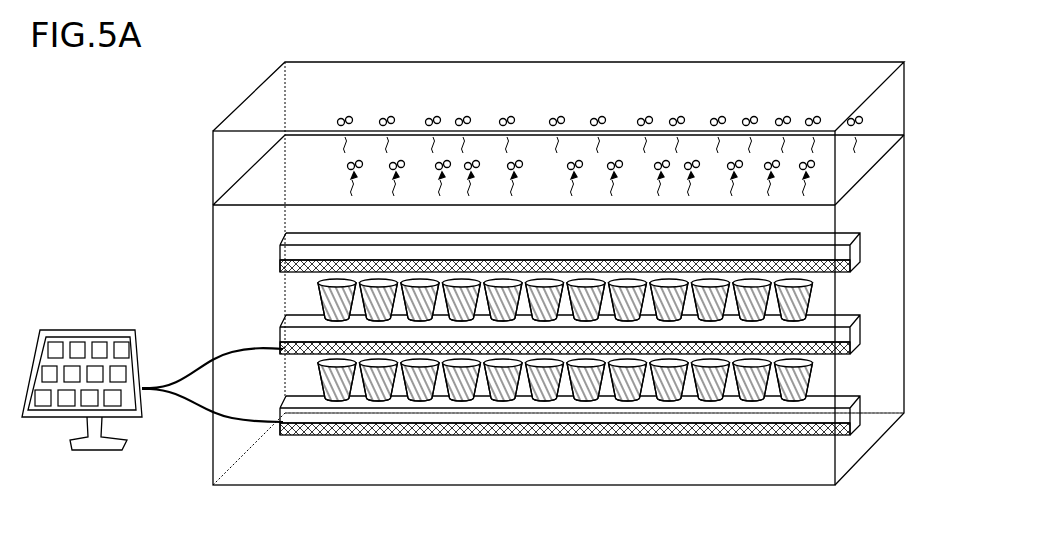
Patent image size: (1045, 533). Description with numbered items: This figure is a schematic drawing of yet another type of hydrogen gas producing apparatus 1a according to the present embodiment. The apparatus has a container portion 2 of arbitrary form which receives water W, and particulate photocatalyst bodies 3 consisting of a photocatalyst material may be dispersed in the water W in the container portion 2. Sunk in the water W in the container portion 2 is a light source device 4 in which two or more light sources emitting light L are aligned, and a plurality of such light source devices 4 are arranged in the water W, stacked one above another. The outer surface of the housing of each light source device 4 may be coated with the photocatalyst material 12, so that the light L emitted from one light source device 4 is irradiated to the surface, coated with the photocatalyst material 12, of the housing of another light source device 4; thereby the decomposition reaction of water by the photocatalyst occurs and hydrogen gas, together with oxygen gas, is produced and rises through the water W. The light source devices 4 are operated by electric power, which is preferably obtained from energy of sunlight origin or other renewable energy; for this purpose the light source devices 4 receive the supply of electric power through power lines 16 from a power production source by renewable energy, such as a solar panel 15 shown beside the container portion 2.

The hydrogen gas producing apparatus 1a is at (226, 87).
The container portion 2 is at (213, 243).
The photocatalyst bodies 3 is at (860, 266).
The light source device 4 is at (278, 346).
The photocatalyst material 12 is at (862, 346).
The solar panel 15 is at (58, 330).
The power lines 16 is at (150, 386).
The light L is at (320, 304).
The water W is at (250, 238).